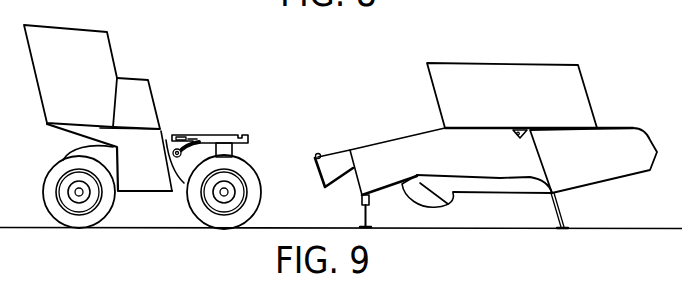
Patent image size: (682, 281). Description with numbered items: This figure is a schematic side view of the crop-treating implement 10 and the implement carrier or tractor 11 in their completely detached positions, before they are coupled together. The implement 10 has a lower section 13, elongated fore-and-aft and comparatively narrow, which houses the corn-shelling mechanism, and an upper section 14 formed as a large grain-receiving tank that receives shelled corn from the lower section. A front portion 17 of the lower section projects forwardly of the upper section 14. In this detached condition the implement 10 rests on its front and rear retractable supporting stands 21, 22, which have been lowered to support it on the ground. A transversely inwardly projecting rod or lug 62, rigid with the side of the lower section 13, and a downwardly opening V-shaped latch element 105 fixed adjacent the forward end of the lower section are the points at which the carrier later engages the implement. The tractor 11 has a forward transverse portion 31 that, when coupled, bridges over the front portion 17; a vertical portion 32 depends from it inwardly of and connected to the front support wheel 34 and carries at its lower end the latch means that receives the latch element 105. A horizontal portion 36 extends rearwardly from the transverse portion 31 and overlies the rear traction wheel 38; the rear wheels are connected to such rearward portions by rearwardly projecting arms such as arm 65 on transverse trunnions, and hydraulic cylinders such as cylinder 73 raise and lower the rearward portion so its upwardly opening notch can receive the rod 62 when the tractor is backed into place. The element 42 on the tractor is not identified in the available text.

The crop-treating implement 10 is at (601, 110).
The implement carrier 11 is at (151, 75).
The lower section 13 is at (617, 163).
The upper section 14 is at (567, 83).
The front portion 17 is at (368, 153).
The front retractable supporting stand 21 is at (371, 213).
The rear retractable supporting stand 22 is at (563, 210).
The forward transverse portion 31 is at (67, 128).
The vertical portion 32 is at (79, 144).
The front support wheel 34 is at (107, 207).
The horizontal portion 36 is at (247, 137).
The rear traction wheel 38 is at (250, 208).
The hopper 42 is at (73, 40).
The transversely inwardly projecting rod 62 is at (522, 136).
The rearwardly projecting arm 65 is at (200, 140).
The hydraulic cylinder 73 is at (180, 135).
The V-shaped latch element 105 is at (378, 200).